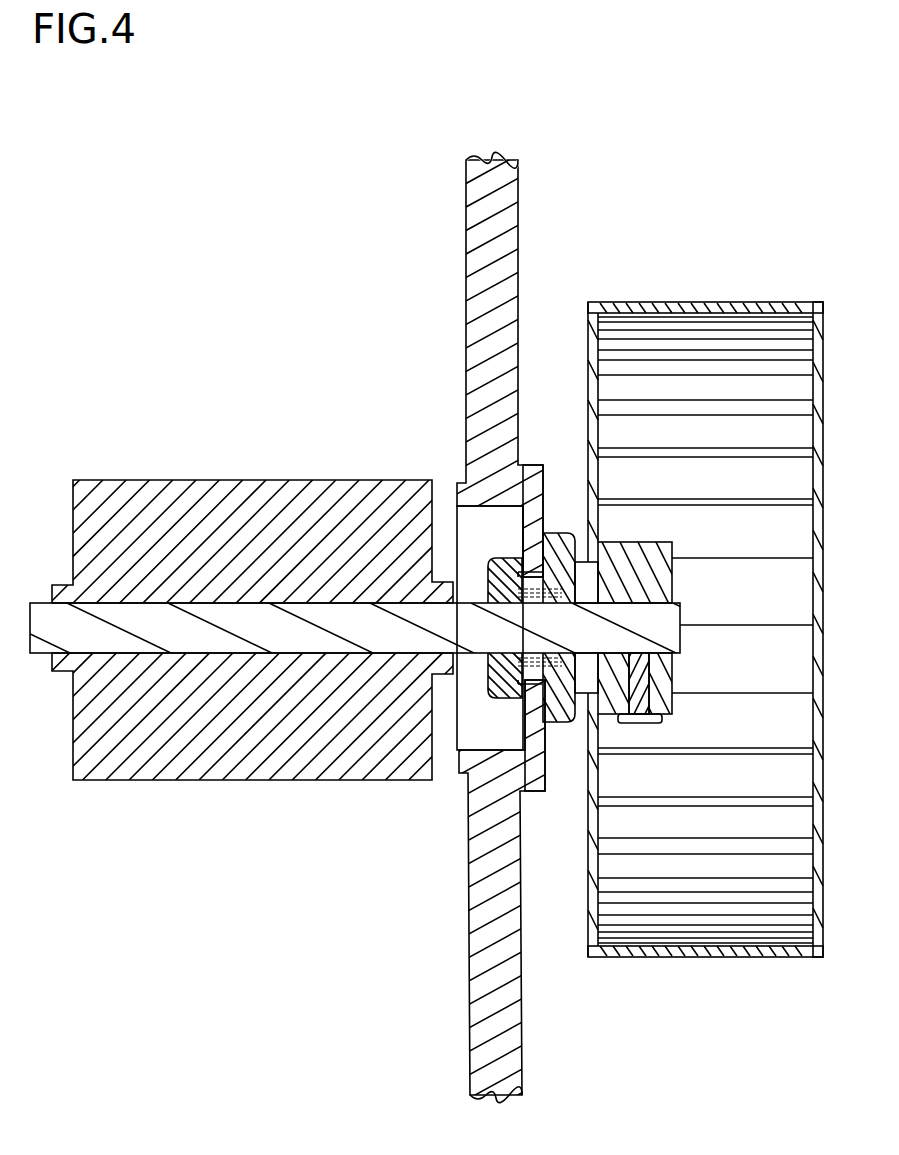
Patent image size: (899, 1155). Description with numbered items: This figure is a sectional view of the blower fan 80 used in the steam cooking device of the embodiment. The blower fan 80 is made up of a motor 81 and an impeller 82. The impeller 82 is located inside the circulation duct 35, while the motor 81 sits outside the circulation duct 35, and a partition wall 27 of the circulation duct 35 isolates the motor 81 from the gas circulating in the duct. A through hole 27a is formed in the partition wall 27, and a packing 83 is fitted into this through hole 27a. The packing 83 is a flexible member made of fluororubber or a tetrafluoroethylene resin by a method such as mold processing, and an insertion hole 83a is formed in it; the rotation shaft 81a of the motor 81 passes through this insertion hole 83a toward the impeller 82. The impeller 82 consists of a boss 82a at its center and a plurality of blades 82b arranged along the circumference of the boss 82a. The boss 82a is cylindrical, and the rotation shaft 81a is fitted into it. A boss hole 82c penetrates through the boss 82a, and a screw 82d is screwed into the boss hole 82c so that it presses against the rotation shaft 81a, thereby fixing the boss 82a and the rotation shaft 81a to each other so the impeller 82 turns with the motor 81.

The blower fan 80 is at (626, 551).
The motor 81 is at (389, 617).
The rotation shaft 81a is at (389, 722).
The impeller 82 is at (667, 620).
The boss 82a is at (626, 725).
The blades 82b is at (705, 582).
The boss hole 82c is at (596, 572).
The screw 82d is at (643, 835).
The packing 83 is at (483, 572).
The insertion hole 83a is at (483, 568).
The partition wall 27 is at (484, 622).
The through hole 27a is at (549, 568).
The circulation duct 35 is at (714, 1058).